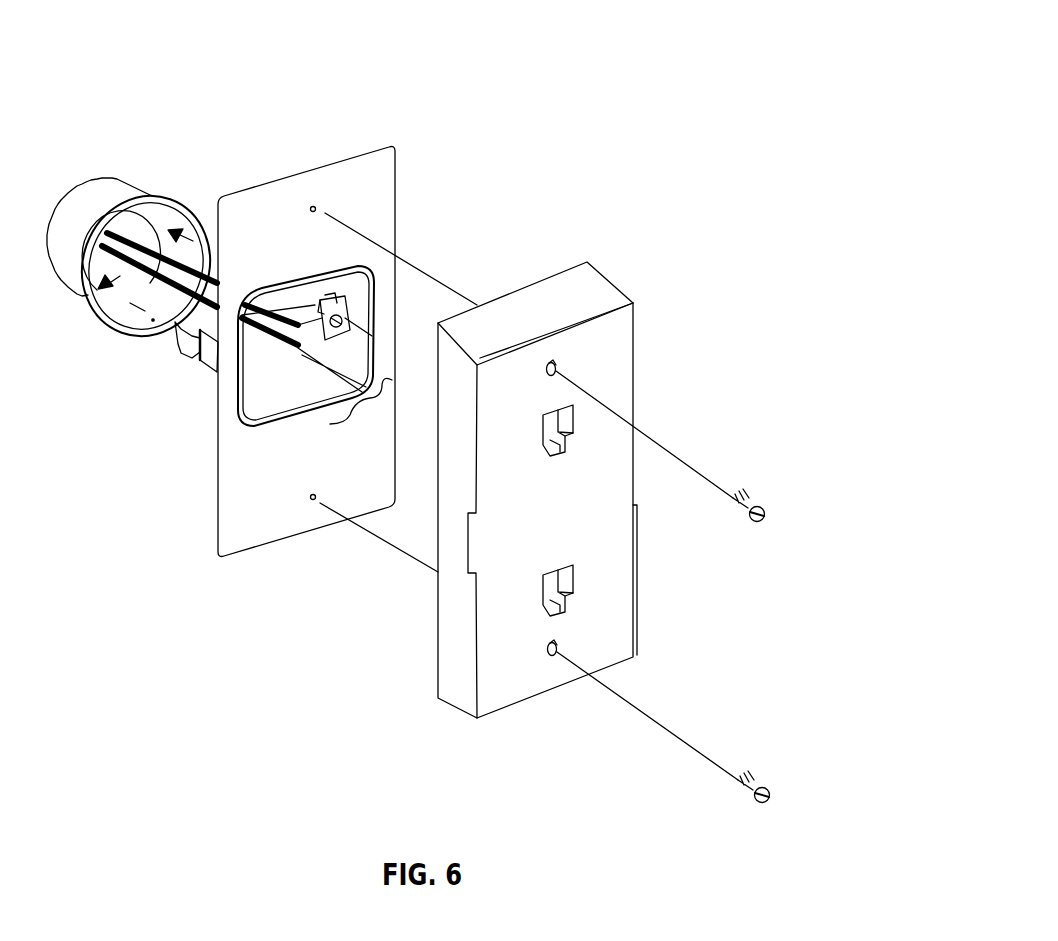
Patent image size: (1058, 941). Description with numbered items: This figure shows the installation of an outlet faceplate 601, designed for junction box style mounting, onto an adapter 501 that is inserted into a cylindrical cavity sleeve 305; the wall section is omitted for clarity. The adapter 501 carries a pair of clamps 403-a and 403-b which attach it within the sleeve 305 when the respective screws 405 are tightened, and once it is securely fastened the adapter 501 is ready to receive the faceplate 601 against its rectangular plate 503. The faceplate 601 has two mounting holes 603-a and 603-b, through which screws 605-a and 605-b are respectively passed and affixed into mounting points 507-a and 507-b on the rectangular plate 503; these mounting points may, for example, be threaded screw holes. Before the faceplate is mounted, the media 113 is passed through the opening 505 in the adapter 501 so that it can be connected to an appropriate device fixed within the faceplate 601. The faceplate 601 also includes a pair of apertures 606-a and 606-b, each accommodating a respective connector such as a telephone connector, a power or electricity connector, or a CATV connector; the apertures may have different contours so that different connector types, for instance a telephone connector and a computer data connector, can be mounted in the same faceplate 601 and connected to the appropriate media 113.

The sleeve 305 is at (117, 198).
The opening 505 is at (325, 287).
The rectangular plate 503 is at (246, 535).
The screws 405 is at (298, 347).
The clamp 403-a is at (330, 300).
The clamp 403-b is at (179, 362).
The mounting point 507-a is at (313, 207).
The mounting point 507-b is at (312, 500).
The media 113 is at (378, 400).
The faceplate 601 is at (580, 283).
The mounting hole 603-a is at (557, 366).
The mounting hole 603-b is at (553, 655).
The aperture 606-a is at (575, 417).
The aperture 606-b is at (575, 590).
The screw 605-a is at (760, 510).
The screw 605-b is at (762, 790).
The adapter 501 is at (410, 127).